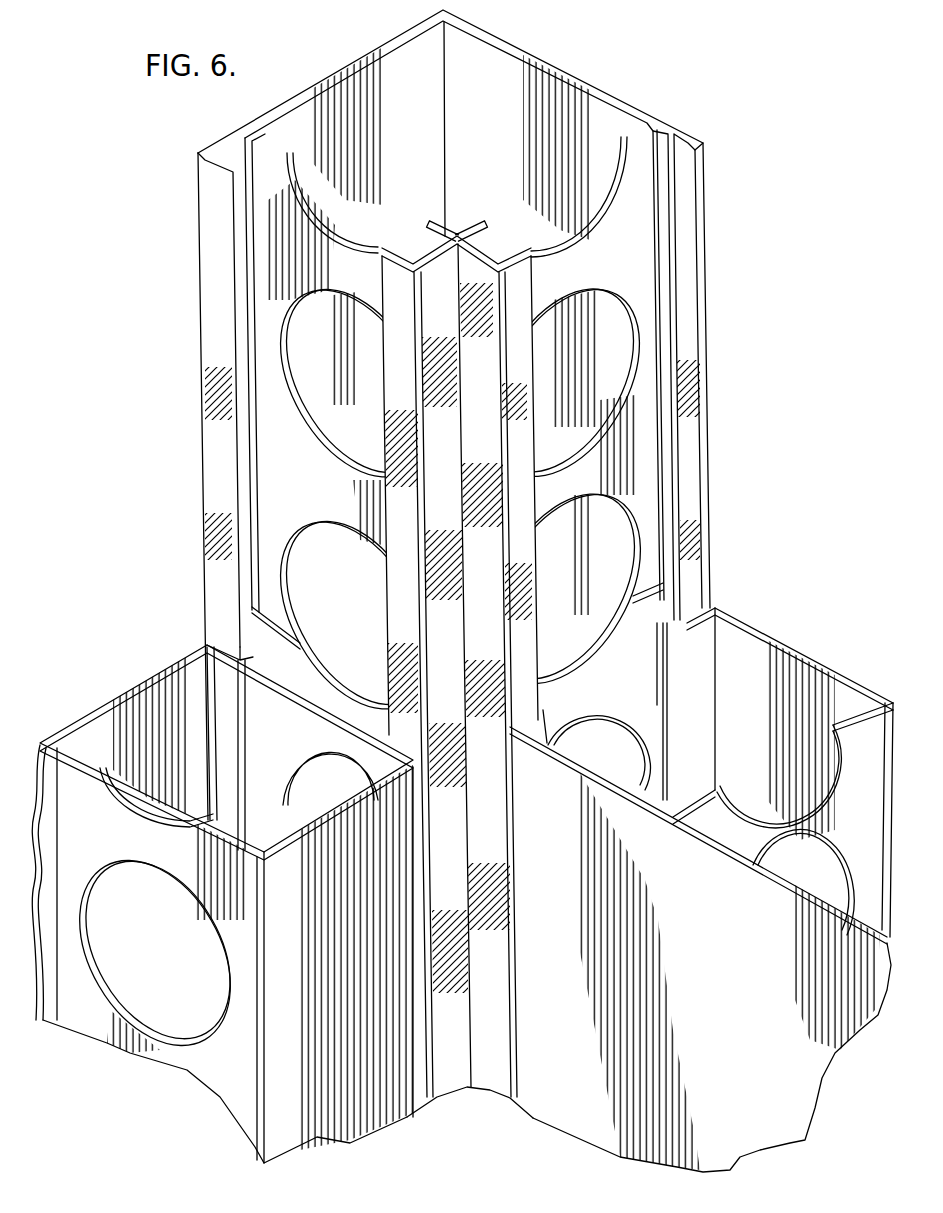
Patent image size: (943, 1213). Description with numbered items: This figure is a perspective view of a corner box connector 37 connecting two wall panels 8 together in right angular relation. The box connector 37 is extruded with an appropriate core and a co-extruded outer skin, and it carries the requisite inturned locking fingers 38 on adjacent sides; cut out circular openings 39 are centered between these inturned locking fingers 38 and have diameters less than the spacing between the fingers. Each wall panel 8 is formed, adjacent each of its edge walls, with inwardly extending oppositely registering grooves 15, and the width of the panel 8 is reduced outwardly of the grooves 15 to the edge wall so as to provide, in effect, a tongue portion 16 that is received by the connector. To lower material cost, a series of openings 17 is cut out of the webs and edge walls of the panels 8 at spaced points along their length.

The corner box connector 37 is at (600, 82).
The inturned locking fingers 38 is at (218, 206).
The cut out circular openings 39 is at (352, 407).
The wall panel 8 is at (152, 661).
The grooves 15 is at (708, 600).
The tongue portion 16 is at (325, 712).
The openings 17 is at (308, 768).